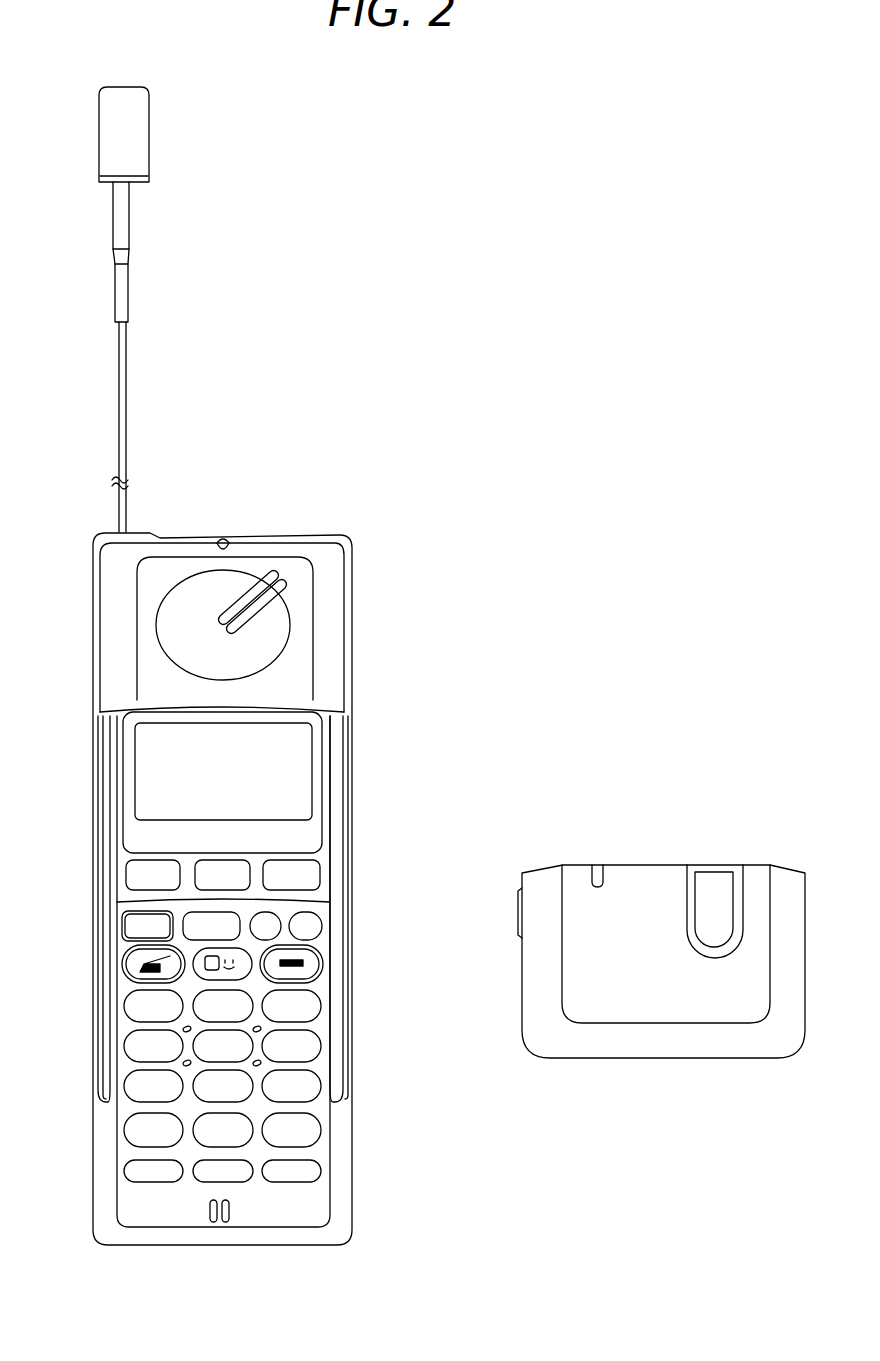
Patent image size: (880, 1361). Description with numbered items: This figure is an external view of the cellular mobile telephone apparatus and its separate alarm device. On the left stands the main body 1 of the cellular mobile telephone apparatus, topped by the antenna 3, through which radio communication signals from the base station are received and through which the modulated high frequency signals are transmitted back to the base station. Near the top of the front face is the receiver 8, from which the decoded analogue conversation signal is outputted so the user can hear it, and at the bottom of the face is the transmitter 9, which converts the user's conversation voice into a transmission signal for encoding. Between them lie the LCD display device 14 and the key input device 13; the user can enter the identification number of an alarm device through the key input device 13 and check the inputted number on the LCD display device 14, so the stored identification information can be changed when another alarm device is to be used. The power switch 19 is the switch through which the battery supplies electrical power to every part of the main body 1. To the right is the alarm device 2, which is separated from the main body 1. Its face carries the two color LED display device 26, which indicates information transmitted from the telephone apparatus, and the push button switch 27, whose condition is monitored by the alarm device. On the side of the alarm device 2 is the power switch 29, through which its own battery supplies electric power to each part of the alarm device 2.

The main body 1 is at (290, 536).
The alarm device 2 is at (538, 868).
The antenna 3 is at (150, 136).
The receiver 8 is at (223, 603).
The transmitter 9 is at (228, 1224).
The key input device 13 is at (362, 865).
The LCD display device 14 is at (300, 768).
The power switch 19 is at (123, 932).
The two color LED display device 26 is at (596, 865).
The push button switch 27 is at (712, 887).
The power switch 29 is at (518, 926).